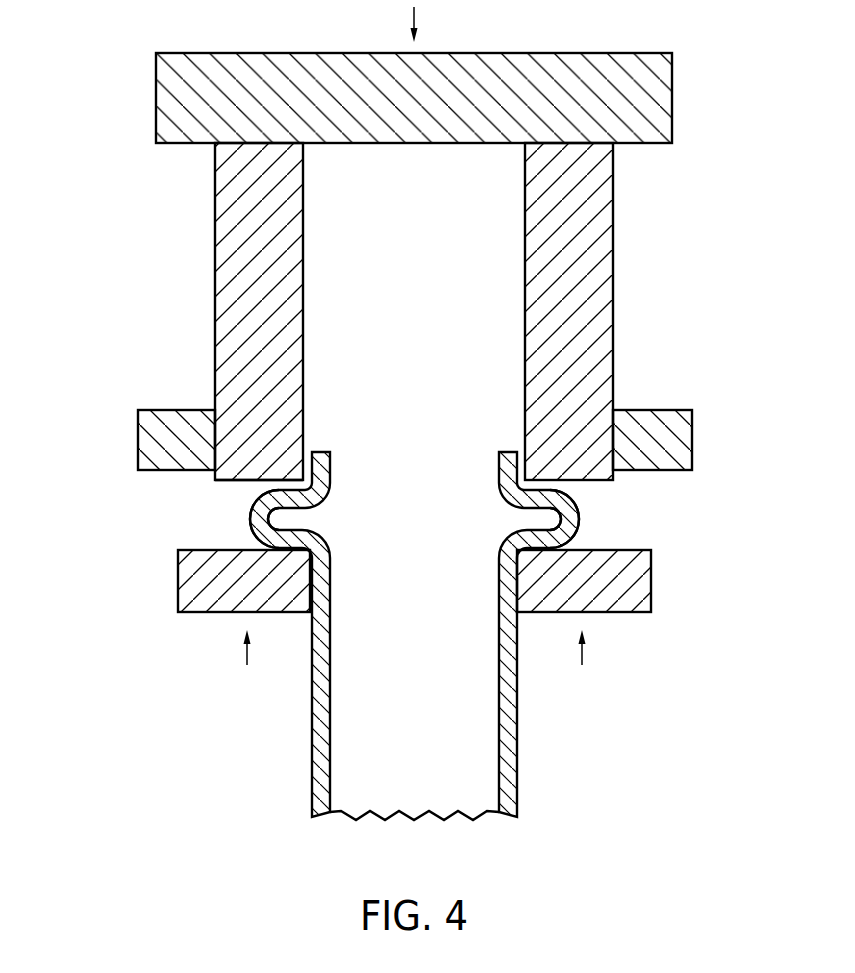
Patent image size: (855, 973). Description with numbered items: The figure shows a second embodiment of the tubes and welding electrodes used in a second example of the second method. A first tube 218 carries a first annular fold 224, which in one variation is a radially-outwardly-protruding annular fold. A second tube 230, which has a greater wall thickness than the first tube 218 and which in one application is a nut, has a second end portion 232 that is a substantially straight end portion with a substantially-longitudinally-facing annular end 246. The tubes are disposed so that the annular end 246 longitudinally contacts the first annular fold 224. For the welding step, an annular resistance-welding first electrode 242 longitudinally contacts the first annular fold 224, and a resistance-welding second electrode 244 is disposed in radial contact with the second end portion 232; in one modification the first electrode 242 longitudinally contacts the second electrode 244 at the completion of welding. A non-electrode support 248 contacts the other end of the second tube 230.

The first tube 218 is at (458, 639).
The first annular fold 224 is at (583, 518).
The second tube 230 is at (338, 311).
The second end portion 232 is at (305, 428).
The first electrode 242 is at (645, 583).
The second electrode 244 is at (145, 438).
The annular end 246 is at (243, 483).
The non-electrode support 248 is at (662, 102).